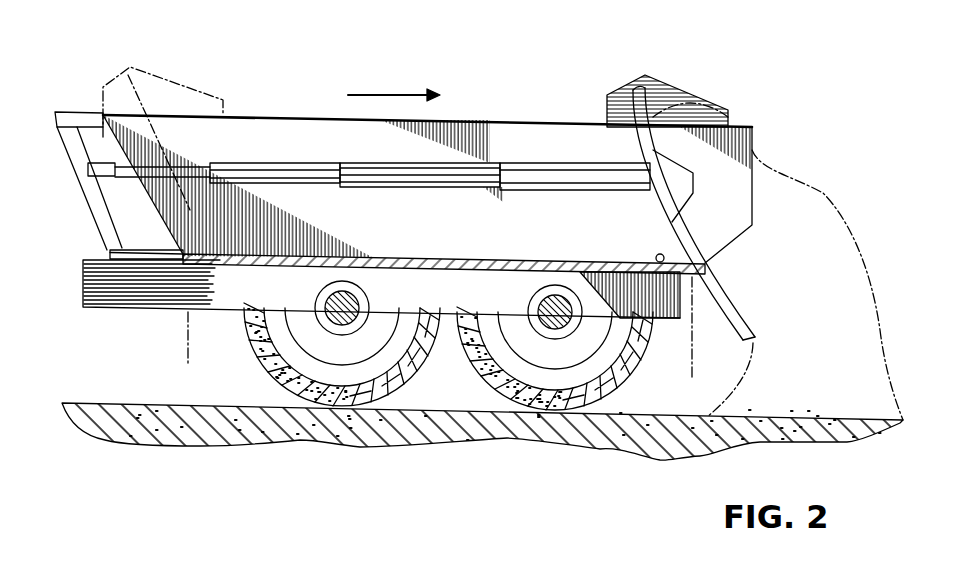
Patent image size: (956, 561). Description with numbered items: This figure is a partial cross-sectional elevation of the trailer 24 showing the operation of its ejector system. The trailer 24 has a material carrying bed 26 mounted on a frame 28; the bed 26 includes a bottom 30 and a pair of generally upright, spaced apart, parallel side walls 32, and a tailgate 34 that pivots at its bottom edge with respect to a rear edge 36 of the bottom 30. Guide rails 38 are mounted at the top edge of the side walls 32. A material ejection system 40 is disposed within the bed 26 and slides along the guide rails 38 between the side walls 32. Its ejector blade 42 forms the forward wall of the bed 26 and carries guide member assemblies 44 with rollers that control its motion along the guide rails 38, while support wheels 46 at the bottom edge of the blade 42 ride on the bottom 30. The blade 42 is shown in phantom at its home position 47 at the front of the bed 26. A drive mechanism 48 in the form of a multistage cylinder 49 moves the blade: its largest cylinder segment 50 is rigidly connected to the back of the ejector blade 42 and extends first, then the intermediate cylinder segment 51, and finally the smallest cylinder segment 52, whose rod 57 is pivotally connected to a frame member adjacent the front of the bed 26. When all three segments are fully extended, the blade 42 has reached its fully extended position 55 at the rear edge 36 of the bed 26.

The trailer 24 is at (457, 91).
The material carrying bed 26 is at (518, 120).
The frame 28 is at (115, 303).
The bottom 30 is at (447, 257).
The side walls 32 is at (283, 156).
The tailgate 34 is at (740, 317).
The rear edge 36 is at (707, 262).
The guide rails 38 is at (82, 110).
The material ejection system 40 is at (283, 102).
The ejector blade 42 is at (670, 210).
The guide member assemblies 44 is at (130, 67).
The support wheels 46 is at (655, 256).
The home position 47 is at (187, 357).
The drive mechanism 48 is at (298, 156).
The multistage cylinder 49 is at (415, 188).
The largest cylinder segment 50 is at (547, 163).
The intermediate cylinder segment 51 is at (362, 163).
The smallest cylinder segment 52 is at (240, 163).
The fully extended position 55 is at (690, 363).
The rod 57 is at (122, 185).